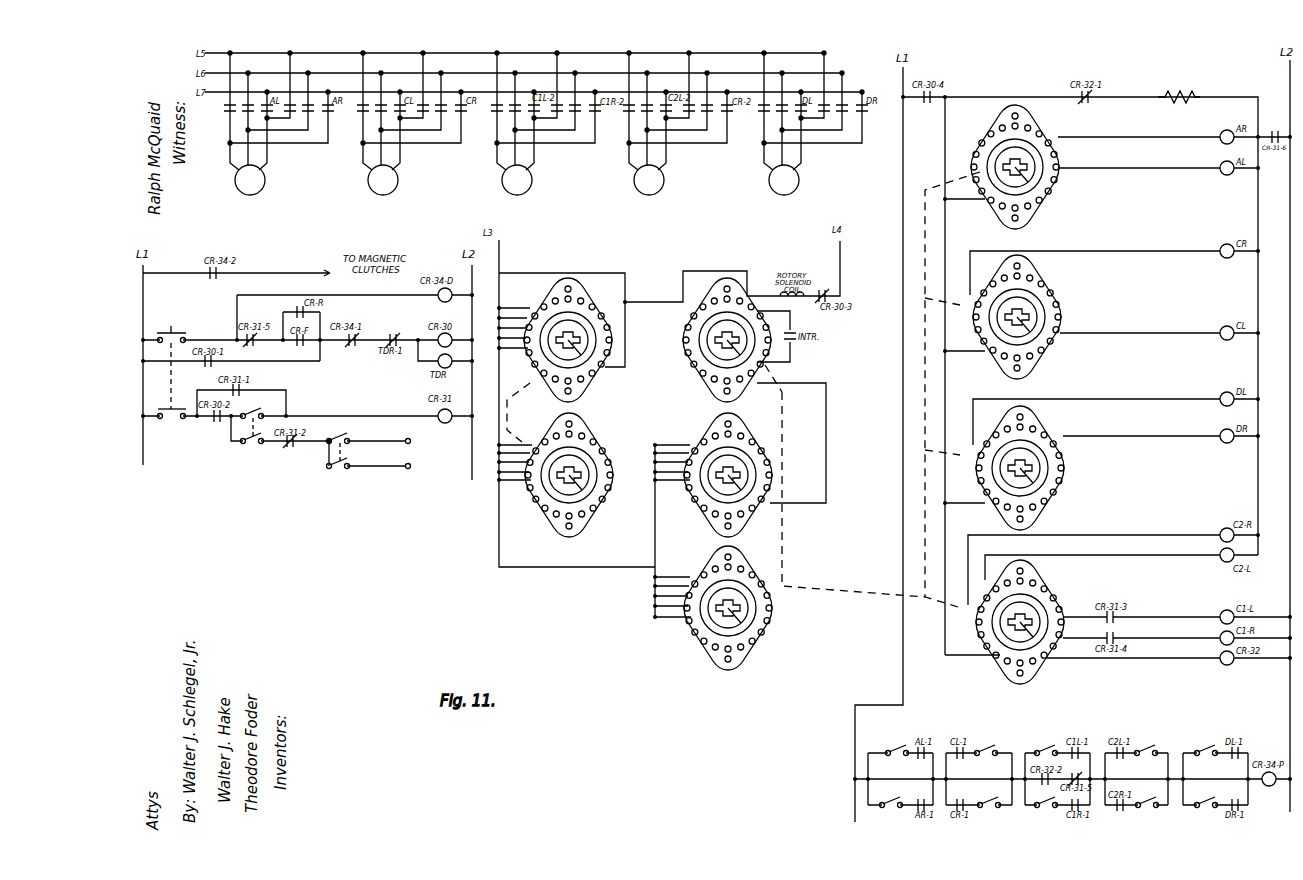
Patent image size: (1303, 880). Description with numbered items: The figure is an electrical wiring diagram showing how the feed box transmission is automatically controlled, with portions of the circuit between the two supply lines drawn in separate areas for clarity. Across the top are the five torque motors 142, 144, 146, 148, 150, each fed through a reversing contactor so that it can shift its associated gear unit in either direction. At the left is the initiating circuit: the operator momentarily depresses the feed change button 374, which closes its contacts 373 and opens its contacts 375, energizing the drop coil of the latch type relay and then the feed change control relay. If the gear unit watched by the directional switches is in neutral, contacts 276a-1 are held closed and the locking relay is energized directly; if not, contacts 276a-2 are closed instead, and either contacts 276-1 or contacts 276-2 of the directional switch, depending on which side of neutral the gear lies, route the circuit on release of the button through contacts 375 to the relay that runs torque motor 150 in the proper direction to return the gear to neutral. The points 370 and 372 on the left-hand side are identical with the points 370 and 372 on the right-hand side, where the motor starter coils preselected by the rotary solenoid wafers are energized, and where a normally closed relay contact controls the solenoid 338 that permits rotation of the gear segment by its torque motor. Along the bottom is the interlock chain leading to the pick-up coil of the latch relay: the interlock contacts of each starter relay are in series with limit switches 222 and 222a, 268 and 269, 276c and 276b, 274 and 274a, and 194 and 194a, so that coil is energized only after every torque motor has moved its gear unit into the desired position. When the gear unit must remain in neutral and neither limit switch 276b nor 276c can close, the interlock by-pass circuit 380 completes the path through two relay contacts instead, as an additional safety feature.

The torque motor 146 is at (250, 195).
The torque motor 144 is at (383, 195).
The torque motor 150 is at (517, 195).
The torque motor 148 is at (649, 195).
The torque motor 142 is at (784, 195).
The contacts 373 is at (160, 326).
The feed change button 374 is at (185, 332).
The contacts 375 is at (168, 420).
The contacts 276a-1 is at (258, 410).
The contacts 276a-2 is at (252, 445).
The contacts 276-1 is at (340, 437).
The contacts 276-2 is at (340, 470).
The point 370 is at (410, 439).
The point 372 is at (410, 468).
The solenoid 338 is at (1180, 90).
The limit switch 222 is at (895, 745).
The limit switch contacts 222a is at (892, 808).
The limit switch 268 is at (990, 746).
The limit switch 269 is at (992, 808).
The limit switch 276c is at (1043, 745).
The limit switch 276b is at (1045, 808).
The interlock by-pass circuit 380 is at (1062, 787).
The limit switch 274 is at (1150, 746).
The limit switch 274a is at (1148, 808).
The limit switch 194 is at (1210, 746).
The limit switch 194a is at (1207, 808).